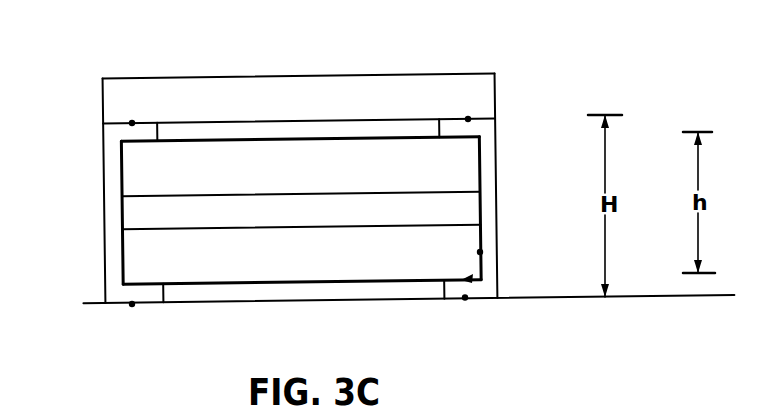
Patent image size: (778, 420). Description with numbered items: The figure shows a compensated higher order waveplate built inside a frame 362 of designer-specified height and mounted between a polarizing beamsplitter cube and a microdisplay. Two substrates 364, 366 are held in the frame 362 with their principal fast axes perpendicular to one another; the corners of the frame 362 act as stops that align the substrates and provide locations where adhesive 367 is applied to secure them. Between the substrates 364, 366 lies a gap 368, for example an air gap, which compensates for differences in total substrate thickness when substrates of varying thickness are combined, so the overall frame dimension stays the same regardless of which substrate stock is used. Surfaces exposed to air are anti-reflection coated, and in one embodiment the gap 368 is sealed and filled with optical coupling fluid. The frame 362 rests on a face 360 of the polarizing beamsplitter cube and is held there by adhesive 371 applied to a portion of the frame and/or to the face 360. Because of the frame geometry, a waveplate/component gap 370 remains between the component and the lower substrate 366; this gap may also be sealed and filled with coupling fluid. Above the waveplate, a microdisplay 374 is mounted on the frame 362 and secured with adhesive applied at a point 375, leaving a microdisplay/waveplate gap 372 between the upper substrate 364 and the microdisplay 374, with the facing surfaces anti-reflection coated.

The face 360 is at (535, 298).
The frame 362 is at (104, 174).
The substrate 364 is at (443, 178).
The substrate 366 is at (443, 266).
The adhesive 367 is at (480, 252).
The gap 368 is at (172, 214).
The waveplate/component gap 370 is at (247, 295).
The adhesive 371 is at (132, 304).
The microdisplay/waveplate gap 372 is at (266, 132).
The microdisplay 374 is at (443, 110).
The point 375 is at (132, 123).